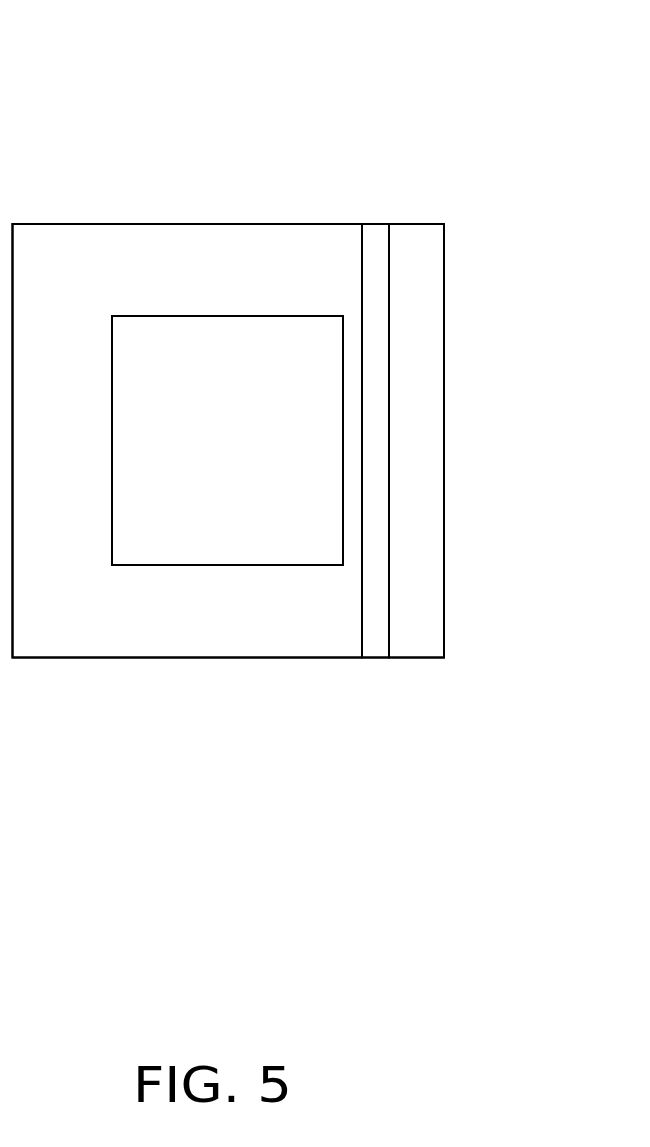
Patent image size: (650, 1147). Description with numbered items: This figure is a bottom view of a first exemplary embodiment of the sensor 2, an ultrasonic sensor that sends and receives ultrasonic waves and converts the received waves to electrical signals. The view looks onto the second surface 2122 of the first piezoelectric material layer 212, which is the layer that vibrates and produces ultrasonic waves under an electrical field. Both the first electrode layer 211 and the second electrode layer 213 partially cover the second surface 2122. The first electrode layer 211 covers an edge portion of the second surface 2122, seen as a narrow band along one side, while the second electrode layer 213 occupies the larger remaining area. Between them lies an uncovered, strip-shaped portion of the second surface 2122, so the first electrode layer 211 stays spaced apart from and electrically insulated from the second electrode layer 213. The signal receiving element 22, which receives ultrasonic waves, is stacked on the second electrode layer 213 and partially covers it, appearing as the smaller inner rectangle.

The sensor 2 is at (150, 48).
The second electrode layer 213 is at (216, 245).
The second surface 2122 is at (377, 237).
The first piezoelectric material layer 212 is at (372, 333).
The first electrode layer 211 is at (415, 258).
The signal receiving element 22 is at (310, 412).